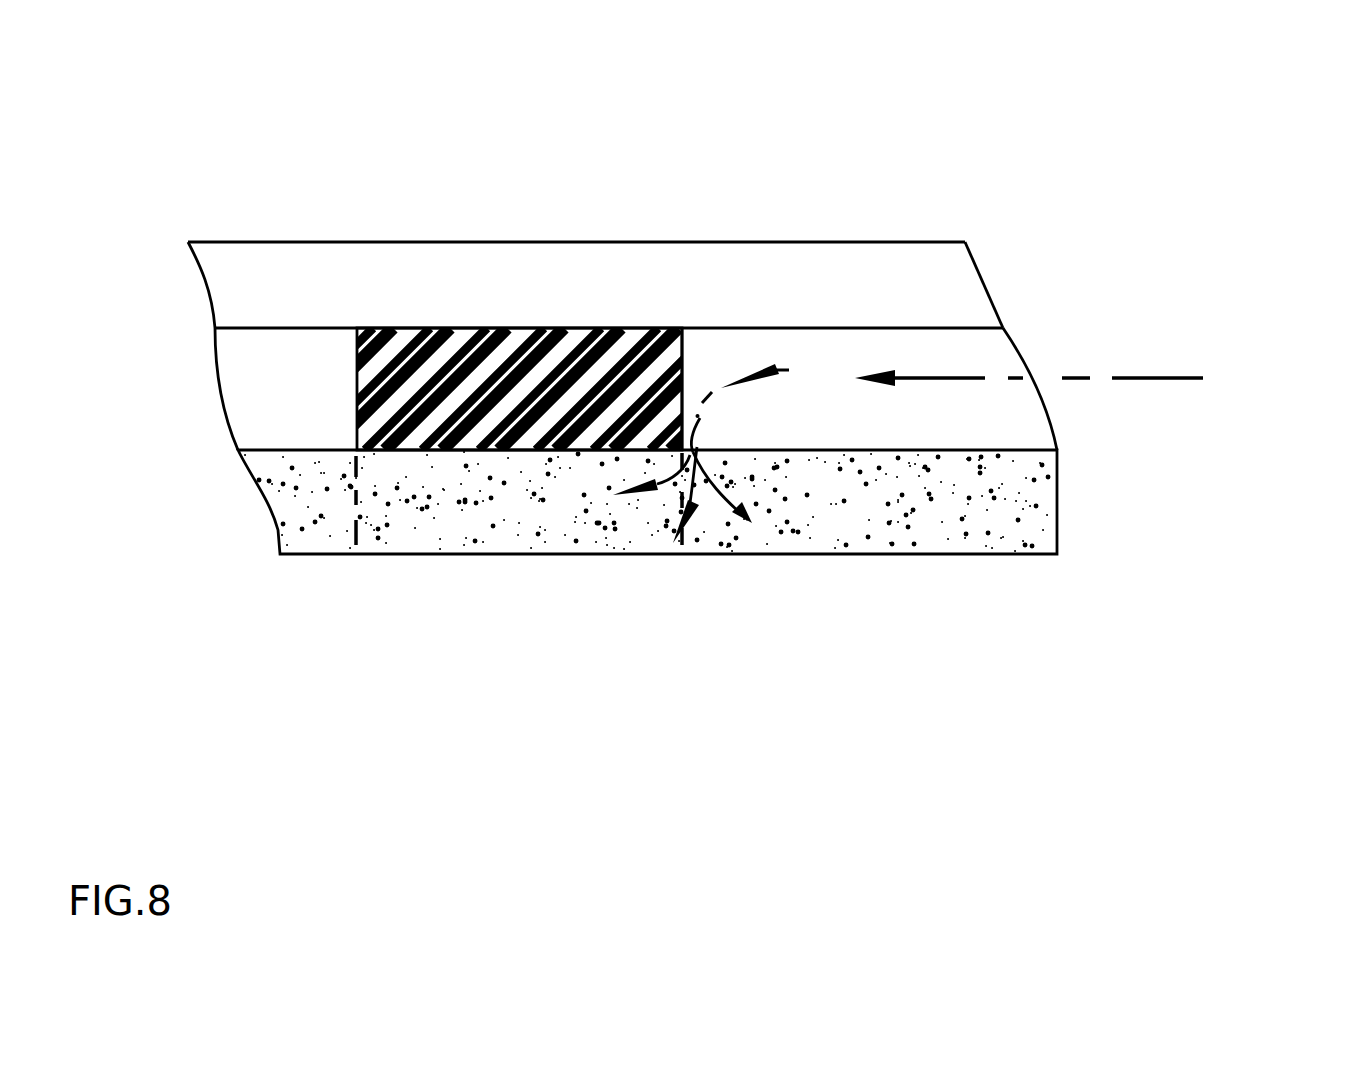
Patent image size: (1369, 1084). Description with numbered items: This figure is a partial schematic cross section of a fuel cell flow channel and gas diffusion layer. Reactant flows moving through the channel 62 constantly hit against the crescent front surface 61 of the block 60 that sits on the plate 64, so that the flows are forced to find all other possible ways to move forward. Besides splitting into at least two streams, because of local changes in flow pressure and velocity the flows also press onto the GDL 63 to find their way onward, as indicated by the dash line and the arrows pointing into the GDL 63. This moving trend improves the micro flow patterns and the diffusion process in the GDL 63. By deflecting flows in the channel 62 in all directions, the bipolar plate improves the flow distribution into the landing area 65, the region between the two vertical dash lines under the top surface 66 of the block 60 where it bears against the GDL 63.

The block 60 is at (507, 355).
The crescent front surface 61 is at (683, 360).
The channel 62 is at (824, 346).
The GDL 63 is at (858, 525).
The plate 64 is at (278, 283).
The landing area 65 is at (492, 535).
The top surface 66 is at (393, 457).